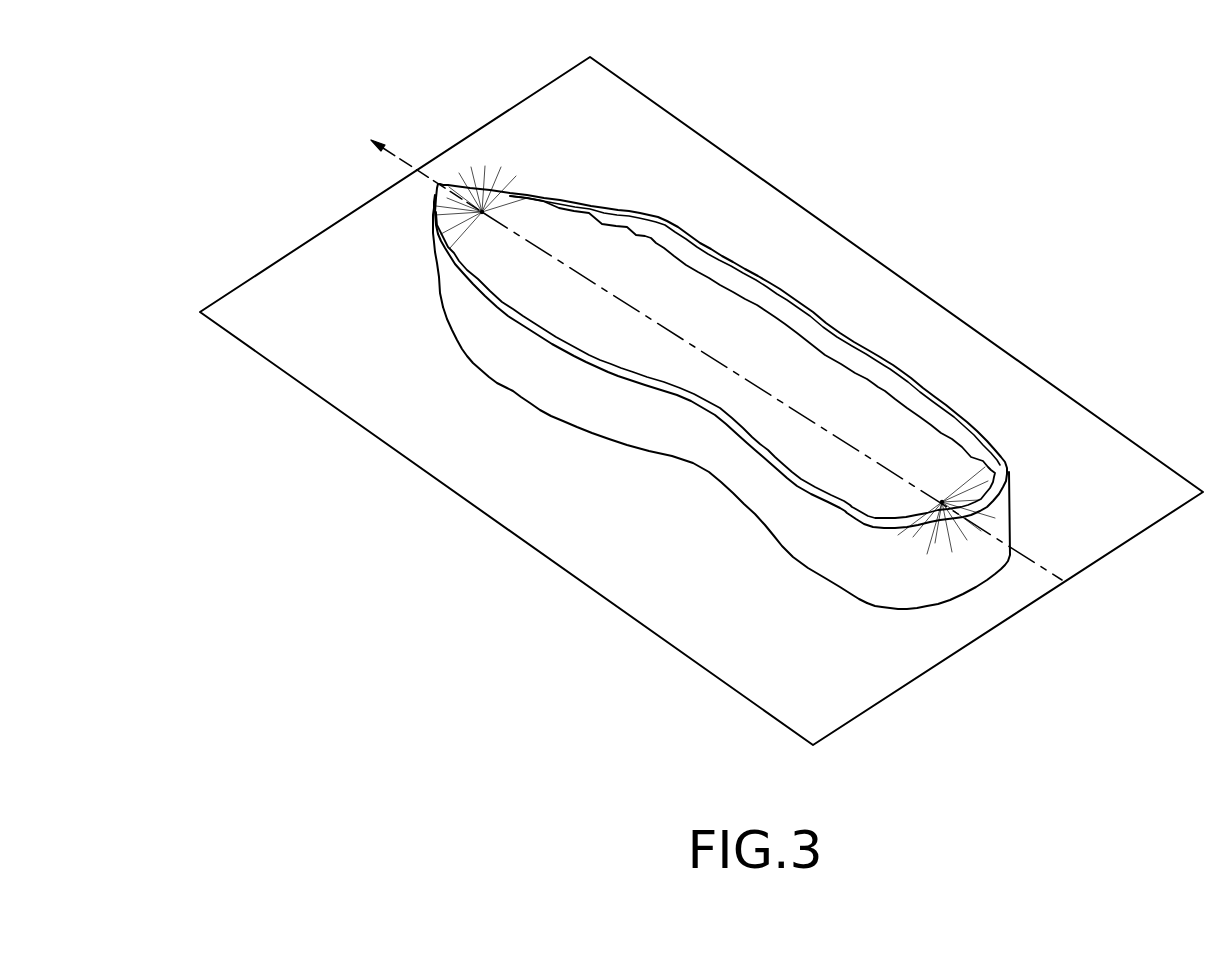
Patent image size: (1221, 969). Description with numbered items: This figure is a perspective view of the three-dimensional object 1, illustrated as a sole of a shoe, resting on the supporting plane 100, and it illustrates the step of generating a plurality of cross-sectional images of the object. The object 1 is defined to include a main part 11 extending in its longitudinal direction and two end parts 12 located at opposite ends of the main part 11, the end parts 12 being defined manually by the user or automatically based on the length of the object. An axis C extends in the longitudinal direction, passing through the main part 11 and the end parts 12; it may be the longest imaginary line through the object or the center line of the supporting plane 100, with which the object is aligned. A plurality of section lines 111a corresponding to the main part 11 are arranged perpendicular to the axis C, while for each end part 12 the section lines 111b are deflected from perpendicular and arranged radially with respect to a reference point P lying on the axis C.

The 3D object 1 is at (478, 385).
The main part 11 is at (683, 428).
The end parts 12 is at (443, 207).
The supporting plane 100 is at (723, 628).
The section lines 111a is at (1018, 435).
The section lines 111b is at (471, 176).
The reference point P is at (488, 207).
The axis C is at (698, 349).